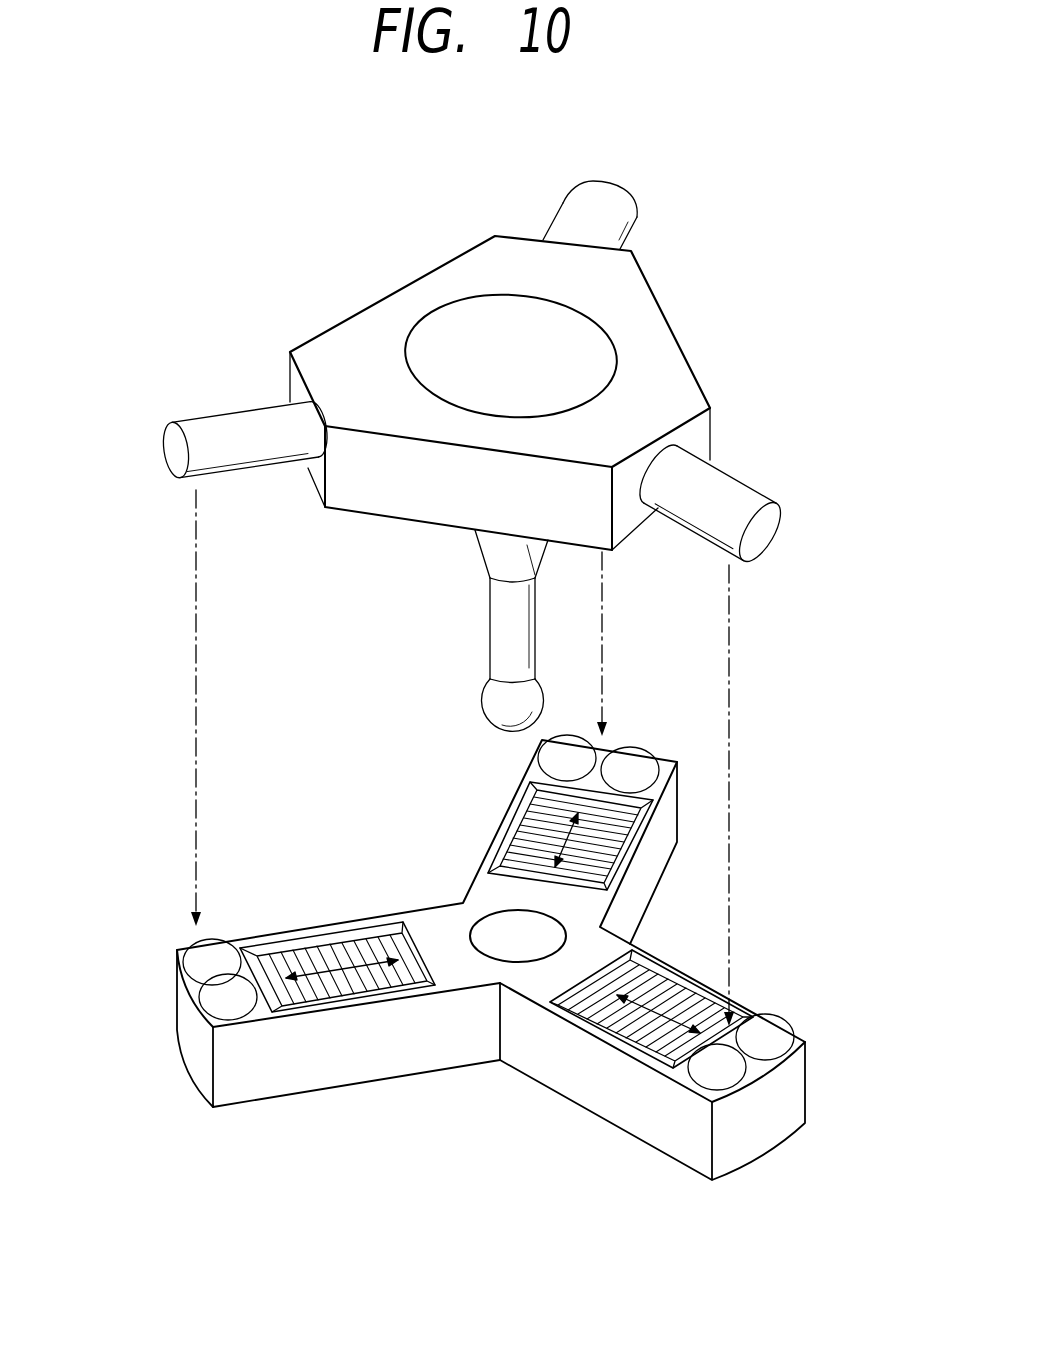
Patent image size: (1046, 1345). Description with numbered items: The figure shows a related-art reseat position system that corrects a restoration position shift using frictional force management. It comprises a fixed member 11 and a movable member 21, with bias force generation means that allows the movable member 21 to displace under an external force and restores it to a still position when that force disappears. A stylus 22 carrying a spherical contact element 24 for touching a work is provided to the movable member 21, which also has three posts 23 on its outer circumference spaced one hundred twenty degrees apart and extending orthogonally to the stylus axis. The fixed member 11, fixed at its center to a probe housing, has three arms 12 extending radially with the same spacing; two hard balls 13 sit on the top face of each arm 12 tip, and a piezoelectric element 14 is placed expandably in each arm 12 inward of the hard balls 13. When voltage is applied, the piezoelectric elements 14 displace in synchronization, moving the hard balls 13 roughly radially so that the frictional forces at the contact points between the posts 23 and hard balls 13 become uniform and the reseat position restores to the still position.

The fixed member 11 is at (540, 988).
The arm 12 is at (650, 878).
The hard ball 13 is at (563, 740).
The piezoelectric element 14 is at (783, 941).
The movable member 21 is at (647, 309).
The stylus 22 is at (497, 613).
The post 23 is at (566, 208).
The spherical contact element 24 is at (482, 702).